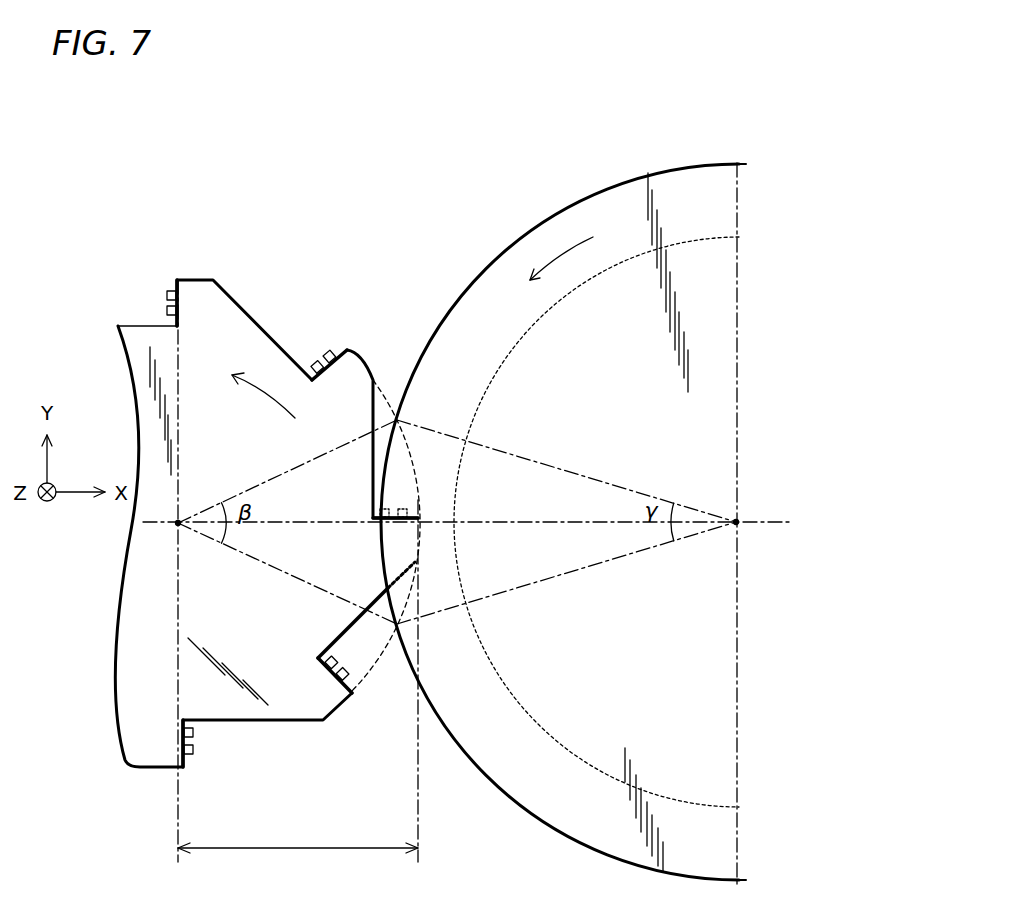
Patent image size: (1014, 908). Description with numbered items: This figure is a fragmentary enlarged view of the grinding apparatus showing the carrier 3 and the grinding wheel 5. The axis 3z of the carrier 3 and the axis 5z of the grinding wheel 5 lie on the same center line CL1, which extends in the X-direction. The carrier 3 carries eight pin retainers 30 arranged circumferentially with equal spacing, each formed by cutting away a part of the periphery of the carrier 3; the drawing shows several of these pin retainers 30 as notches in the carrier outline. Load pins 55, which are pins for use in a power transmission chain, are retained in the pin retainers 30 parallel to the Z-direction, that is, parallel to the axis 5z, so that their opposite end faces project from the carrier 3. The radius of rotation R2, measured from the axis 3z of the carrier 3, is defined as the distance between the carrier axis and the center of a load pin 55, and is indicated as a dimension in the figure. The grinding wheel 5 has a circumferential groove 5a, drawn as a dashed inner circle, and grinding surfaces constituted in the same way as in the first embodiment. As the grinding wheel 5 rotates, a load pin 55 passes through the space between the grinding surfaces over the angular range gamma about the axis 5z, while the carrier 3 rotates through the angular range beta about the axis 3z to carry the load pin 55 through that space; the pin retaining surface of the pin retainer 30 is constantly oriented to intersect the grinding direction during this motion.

The carrier 3 is at (215, 318).
The axis of the carrier 3z is at (182, 528).
The grinding wheel 5 is at (555, 230).
The circumferential groove 5a is at (547, 738).
The axis of the grinding wheel 5z is at (740, 525).
The pin retainer 30 is at (155, 287).
The load pin 55 is at (177, 280).
The center line CL1 is at (771, 517).
The radius of rotation R2 is at (298, 833).